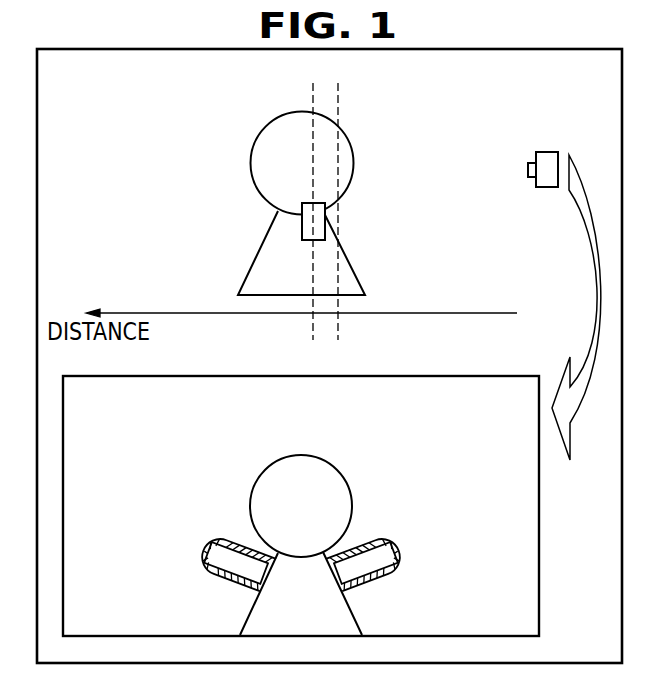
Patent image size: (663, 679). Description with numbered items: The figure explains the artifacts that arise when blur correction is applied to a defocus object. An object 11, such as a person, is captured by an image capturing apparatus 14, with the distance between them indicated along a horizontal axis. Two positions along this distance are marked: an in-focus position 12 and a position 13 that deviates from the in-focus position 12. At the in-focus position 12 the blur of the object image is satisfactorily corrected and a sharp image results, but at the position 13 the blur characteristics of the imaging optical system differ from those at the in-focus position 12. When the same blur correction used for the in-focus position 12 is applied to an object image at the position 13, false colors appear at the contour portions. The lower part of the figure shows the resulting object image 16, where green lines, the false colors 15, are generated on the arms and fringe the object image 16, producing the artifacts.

The object 11 is at (276, 120).
The in-focus position 12 is at (338, 330).
The position deviating from the in-focus position 13 is at (313, 329).
The image capturing apparatus 14 is at (545, 151).
The false colors 15 is at (216, 537).
The object image 16 is at (330, 461).